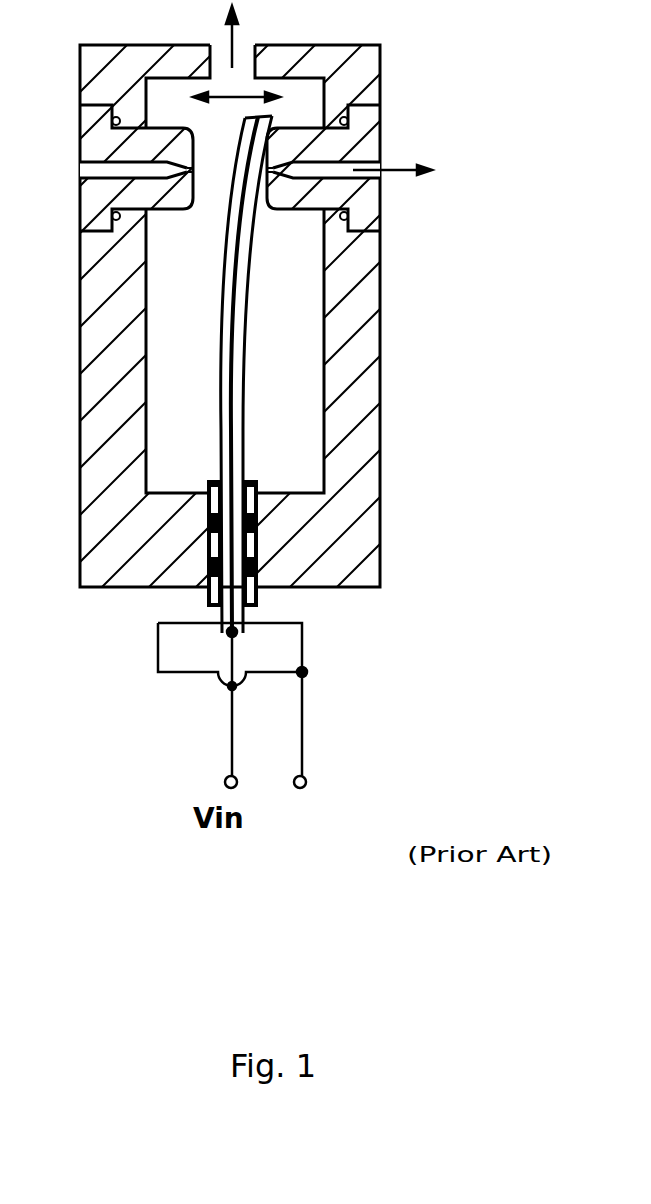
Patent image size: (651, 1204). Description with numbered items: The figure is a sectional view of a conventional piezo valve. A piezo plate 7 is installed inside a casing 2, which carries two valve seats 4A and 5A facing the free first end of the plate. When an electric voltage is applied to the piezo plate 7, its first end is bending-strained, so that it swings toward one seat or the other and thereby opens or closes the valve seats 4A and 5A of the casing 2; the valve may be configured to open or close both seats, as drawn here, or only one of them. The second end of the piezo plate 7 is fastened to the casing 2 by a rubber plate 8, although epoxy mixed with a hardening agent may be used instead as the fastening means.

The casing 2 is at (363, 407).
The valve seat 4A is at (192, 197).
The valve seat 5A is at (265, 197).
The piezo plate 7 is at (238, 375).
The rubber plate 8 is at (258, 603).